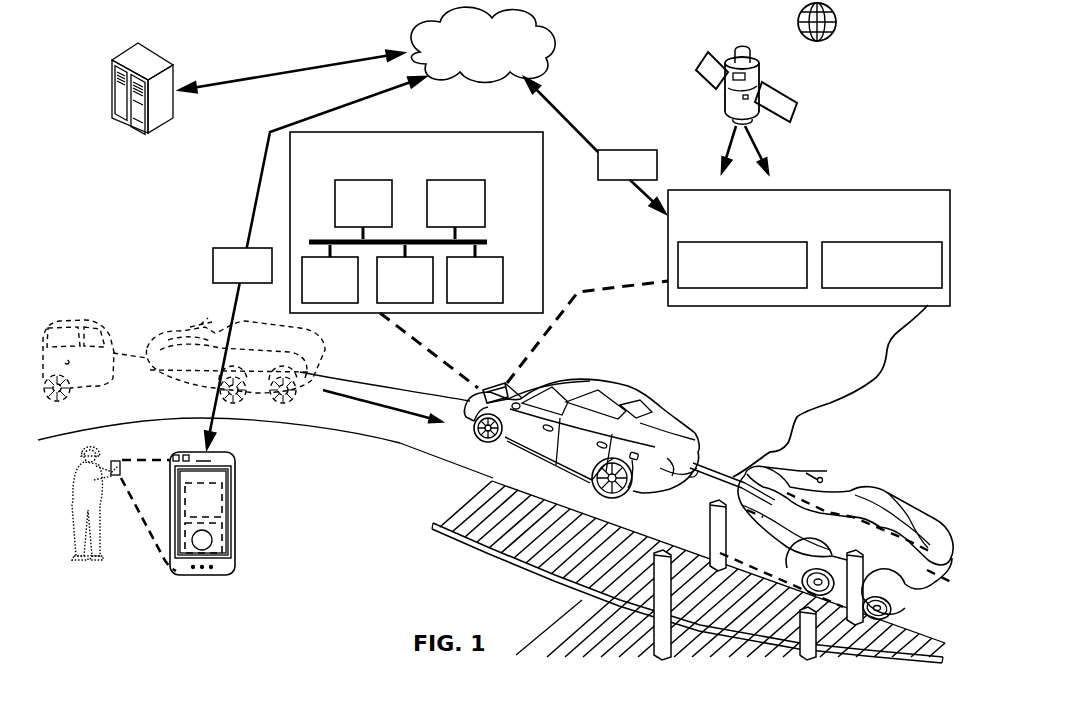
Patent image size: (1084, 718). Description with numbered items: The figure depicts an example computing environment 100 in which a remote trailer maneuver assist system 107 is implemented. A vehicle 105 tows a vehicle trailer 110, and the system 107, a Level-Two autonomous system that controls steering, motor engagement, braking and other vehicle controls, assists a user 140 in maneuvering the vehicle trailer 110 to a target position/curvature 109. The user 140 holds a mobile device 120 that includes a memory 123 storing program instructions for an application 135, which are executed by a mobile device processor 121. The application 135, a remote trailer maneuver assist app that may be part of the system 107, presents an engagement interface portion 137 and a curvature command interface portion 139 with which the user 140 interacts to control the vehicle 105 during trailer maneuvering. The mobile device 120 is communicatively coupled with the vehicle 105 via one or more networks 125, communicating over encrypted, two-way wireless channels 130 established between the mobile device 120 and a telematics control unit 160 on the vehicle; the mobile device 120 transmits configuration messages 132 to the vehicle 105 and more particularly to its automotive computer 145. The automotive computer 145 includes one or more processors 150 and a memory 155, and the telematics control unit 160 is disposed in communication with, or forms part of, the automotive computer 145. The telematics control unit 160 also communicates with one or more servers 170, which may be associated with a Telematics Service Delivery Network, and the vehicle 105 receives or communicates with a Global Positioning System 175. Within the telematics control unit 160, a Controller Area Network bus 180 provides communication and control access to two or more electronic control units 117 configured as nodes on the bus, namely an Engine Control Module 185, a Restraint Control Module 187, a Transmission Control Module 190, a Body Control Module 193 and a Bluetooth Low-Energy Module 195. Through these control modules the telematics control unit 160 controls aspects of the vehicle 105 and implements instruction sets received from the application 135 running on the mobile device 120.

The computing environment 100 is at (930, 57).
The vehicle 105 is at (663, 432).
The remote trailer maneuver assist system 107 is at (645, 359).
The target position/curvature 109 is at (693, 545).
The vehicle trailer 110 is at (700, 470).
The electronic control units 117 is at (512, 212).
The mobile device 120 is at (233, 452).
The mobile device processor 121 is at (178, 455).
The memory 123 is at (181, 452).
The network 125 is at (483, 44).
The wireless channels 130 is at (248, 240).
The configuration messages 132 is at (435, 216).
The application 135 is at (231, 497).
The engagement interface portion 137 is at (204, 483).
The curvature command interface portion 139 is at (220, 540).
The user 140 is at (84, 445).
The automotive computer 145 is at (809, 248).
The processor(s) 150 is at (742, 265).
The memory 155 is at (882, 265).
The telematics control unit 160 is at (416, 222).
The server 170 is at (148, 134).
The Global Positioning System 175 is at (760, 64).
The Controller Area Network bus 180 is at (346, 240).
The Engine Control Module 185 is at (363, 203).
The Restraint Control Module 187 is at (456, 203).
The Transmission Control Module 190 is at (330, 280).
The Body Control Module 193 is at (405, 280).
The Bluetooth Low-Energy Module 195 is at (475, 280).